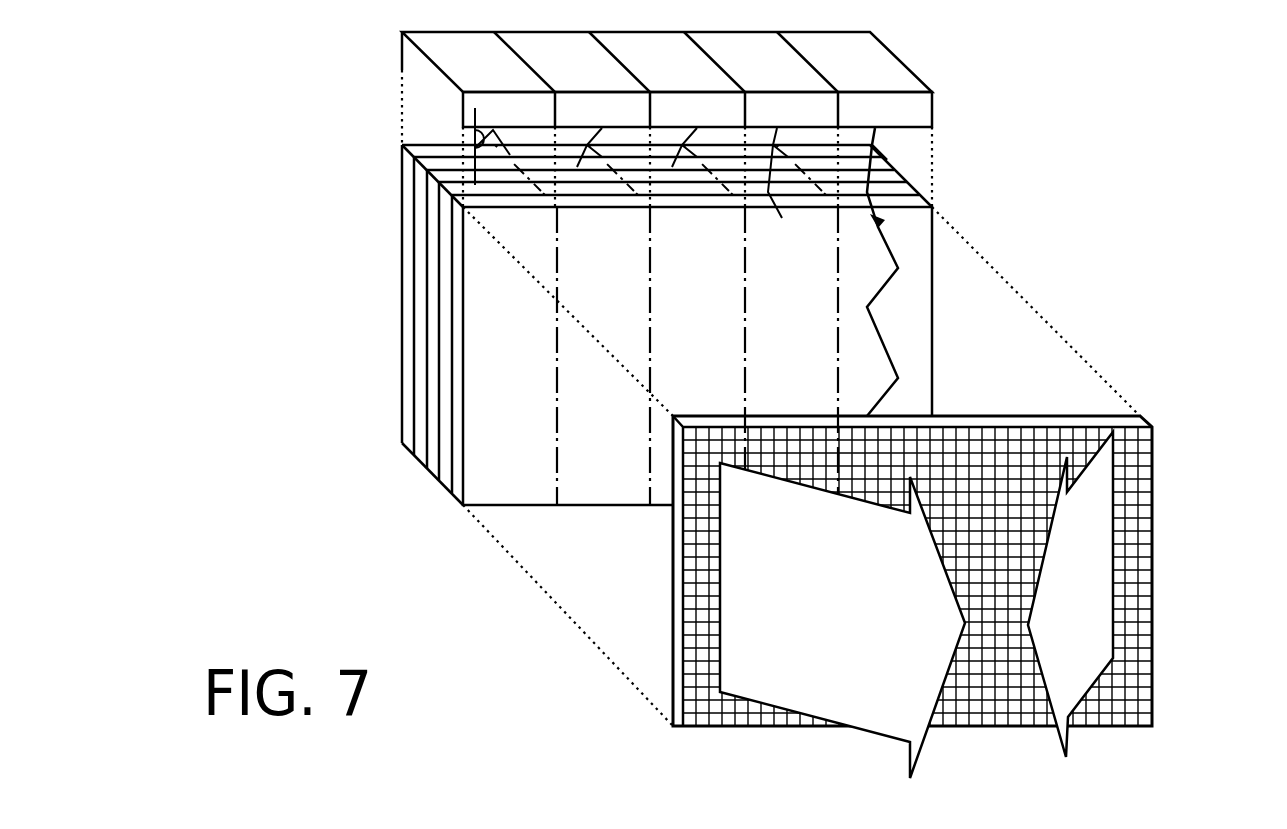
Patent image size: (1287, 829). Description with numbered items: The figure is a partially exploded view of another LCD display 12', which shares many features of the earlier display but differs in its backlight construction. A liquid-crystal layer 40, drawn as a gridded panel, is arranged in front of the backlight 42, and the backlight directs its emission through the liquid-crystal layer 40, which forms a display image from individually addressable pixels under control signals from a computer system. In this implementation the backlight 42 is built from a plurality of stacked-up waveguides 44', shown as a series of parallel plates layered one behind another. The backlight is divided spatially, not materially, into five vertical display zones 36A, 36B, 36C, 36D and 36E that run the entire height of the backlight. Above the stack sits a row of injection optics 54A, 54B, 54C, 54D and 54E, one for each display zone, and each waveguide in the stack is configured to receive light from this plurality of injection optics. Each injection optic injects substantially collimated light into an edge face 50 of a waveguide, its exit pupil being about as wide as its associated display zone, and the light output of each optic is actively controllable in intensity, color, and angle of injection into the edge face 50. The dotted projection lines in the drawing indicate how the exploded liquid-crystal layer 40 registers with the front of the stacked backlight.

The LCD display 12' is at (839, 410).
The liquid-crystal layer 40 is at (1153, 582).
The backlight 42 is at (256, 288).
The stacked-up waveguides 44' is at (608, 319).
The edge face 50 is at (906, 168).
The display zone 36A is at (529, 322).
The display zone 36B is at (634, 322).
The display zone 36C is at (711, 322).
The display zone 36D is at (806, 322).
The display zone 36E is at (918, 322).
The injection optic 54A is at (497, 76).
The injection optic 54B is at (592, 76).
The injection optic 54C is at (687, 76).
The injection optic 54D is at (782, 76).
The injection optic 54E is at (877, 76).